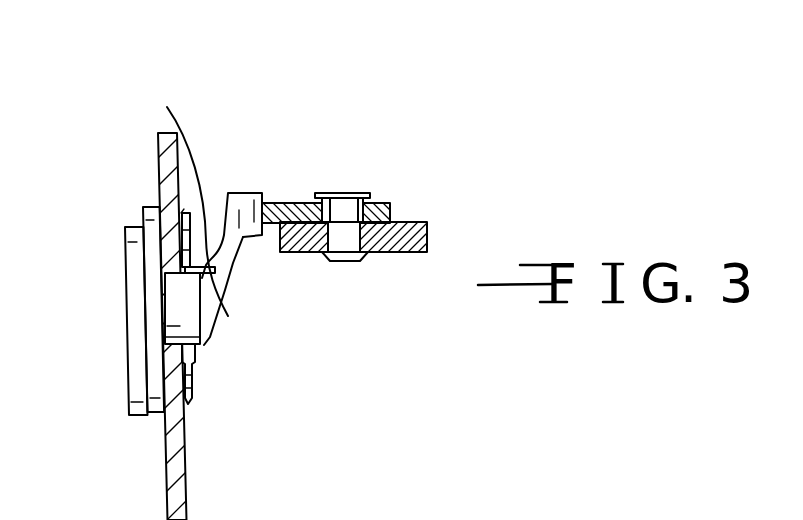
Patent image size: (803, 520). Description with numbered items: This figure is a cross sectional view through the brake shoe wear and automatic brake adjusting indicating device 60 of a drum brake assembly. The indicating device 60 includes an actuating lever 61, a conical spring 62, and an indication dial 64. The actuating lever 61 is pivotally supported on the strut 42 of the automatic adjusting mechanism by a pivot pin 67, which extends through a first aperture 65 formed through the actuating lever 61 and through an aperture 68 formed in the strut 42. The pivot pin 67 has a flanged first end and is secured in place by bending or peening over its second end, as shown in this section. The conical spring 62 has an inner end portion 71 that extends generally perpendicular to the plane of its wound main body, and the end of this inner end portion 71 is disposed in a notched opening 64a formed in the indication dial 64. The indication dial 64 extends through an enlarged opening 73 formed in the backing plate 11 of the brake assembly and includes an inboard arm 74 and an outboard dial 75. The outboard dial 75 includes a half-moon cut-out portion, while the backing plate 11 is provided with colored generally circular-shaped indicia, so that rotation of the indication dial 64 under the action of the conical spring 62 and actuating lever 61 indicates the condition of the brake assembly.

The backing plate 11 is at (185, 480).
The strut 42 is at (427, 220).
The brake shoe wear and automatic brake adjusting indicating device 60 is at (262, 194).
The actuating lever 61 is at (385, 203).
The conical spring 62 is at (193, 381).
The indication dial 64 is at (232, 344).
The notched opening 64a is at (175, 192).
The first aperture 65 is at (337, 194).
The pivot pin 67 is at (348, 194).
The aperture 68 is at (348, 261).
The inner end portion 71 is at (228, 316).
The enlarged opening 73 is at (184, 275).
The inboard arm 74 is at (248, 190).
The outboard dial 75 is at (128, 337).